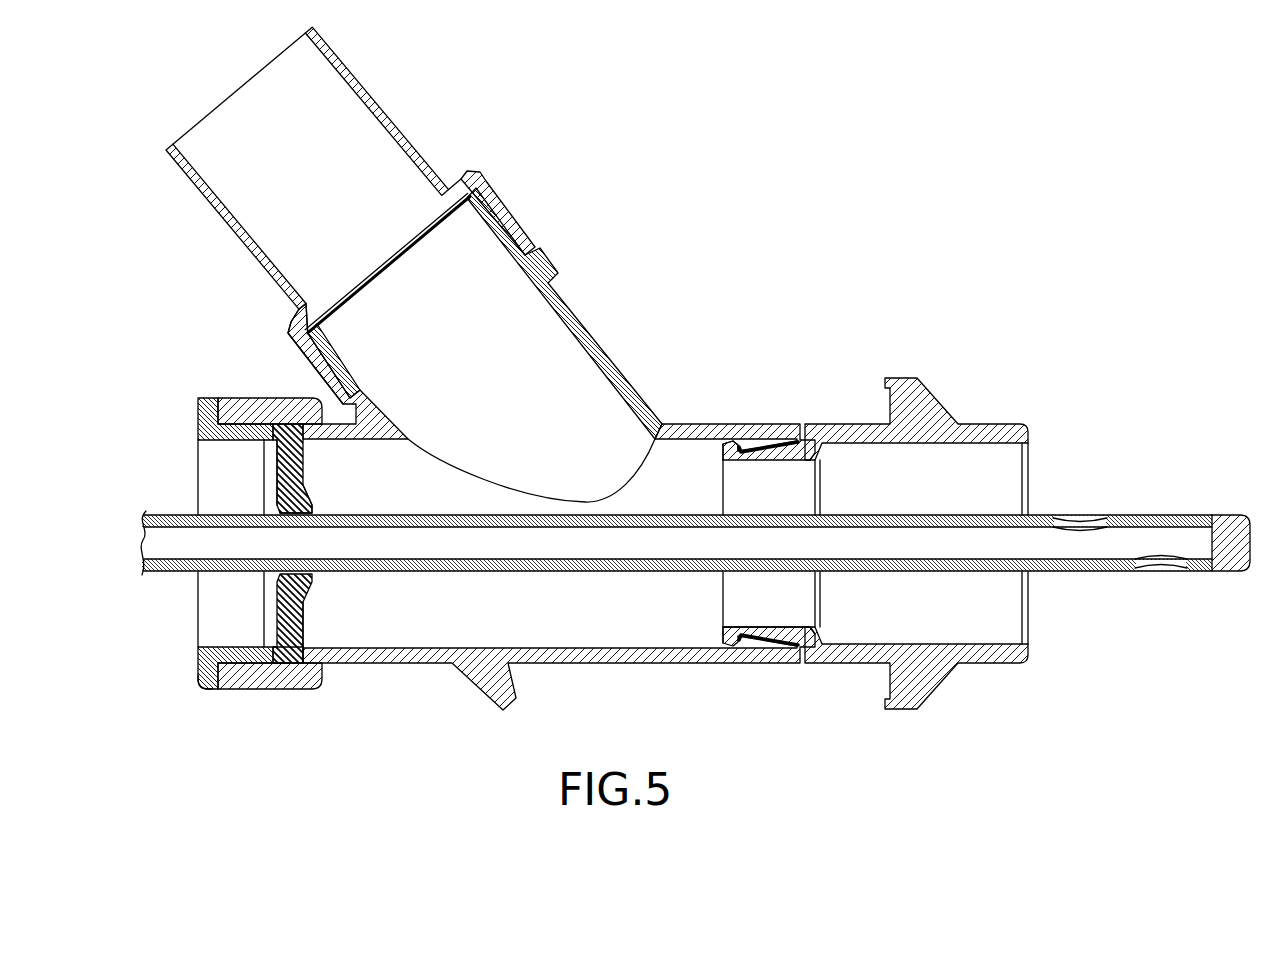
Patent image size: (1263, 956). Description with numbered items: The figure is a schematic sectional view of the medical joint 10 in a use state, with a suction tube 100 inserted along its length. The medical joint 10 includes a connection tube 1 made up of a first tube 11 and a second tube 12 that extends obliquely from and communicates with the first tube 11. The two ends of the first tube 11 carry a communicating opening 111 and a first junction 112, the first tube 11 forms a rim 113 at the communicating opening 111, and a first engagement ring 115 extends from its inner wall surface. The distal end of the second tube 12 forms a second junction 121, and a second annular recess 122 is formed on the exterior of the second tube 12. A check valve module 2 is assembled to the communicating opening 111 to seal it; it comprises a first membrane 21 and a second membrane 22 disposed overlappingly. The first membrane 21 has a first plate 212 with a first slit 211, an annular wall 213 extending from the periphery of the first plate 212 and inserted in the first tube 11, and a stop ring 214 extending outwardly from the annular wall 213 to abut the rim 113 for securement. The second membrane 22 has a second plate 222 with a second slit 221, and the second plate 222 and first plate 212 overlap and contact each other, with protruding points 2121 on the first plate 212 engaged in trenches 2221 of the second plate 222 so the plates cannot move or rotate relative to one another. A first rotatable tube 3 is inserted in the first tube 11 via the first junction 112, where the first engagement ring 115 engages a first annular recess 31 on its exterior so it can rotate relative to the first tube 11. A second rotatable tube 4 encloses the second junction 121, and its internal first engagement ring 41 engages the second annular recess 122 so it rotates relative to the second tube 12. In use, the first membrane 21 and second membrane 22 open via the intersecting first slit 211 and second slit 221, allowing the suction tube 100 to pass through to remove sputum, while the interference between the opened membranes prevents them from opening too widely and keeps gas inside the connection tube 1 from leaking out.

The medical joint 10 is at (650, 247).
The connection tube 1 is at (776, 334).
The first tube 11 is at (714, 423).
The second tube 12 is at (614, 362).
The second junction 121 is at (339, 350).
The second annular recess 122 is at (488, 212).
The communicating opening 111 is at (240, 646).
The first junction 112 is at (796, 628).
The rim 113 is at (207, 685).
The first engagement ring 115 is at (745, 457).
The check valve module 2 is at (122, 394).
The first membrane 21 is at (196, 425).
The first slit 211 is at (312, 576).
The first plate 212 is at (305, 463).
The protruding points 2121 is at (305, 614).
The annular wall 213 is at (249, 397).
The stop ring 214 is at (212, 673).
The second membrane 22 is at (275, 465).
The second slit 221 is at (316, 507).
The second plate 222 is at (276, 488).
The trenches 2221 is at (277, 663).
The first rotatable tube 3 is at (998, 423).
The first annular recess 31 is at (773, 441).
The second rotatable tube 4 is at (384, 80).
The first engagement ring 41 is at (466, 206).
The suction tube 100 is at (582, 573).